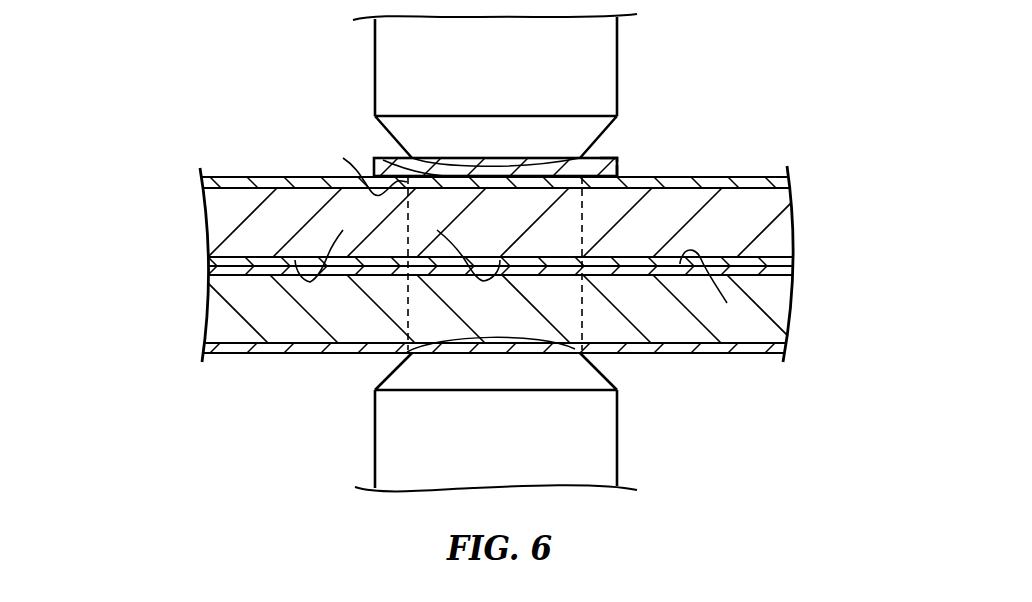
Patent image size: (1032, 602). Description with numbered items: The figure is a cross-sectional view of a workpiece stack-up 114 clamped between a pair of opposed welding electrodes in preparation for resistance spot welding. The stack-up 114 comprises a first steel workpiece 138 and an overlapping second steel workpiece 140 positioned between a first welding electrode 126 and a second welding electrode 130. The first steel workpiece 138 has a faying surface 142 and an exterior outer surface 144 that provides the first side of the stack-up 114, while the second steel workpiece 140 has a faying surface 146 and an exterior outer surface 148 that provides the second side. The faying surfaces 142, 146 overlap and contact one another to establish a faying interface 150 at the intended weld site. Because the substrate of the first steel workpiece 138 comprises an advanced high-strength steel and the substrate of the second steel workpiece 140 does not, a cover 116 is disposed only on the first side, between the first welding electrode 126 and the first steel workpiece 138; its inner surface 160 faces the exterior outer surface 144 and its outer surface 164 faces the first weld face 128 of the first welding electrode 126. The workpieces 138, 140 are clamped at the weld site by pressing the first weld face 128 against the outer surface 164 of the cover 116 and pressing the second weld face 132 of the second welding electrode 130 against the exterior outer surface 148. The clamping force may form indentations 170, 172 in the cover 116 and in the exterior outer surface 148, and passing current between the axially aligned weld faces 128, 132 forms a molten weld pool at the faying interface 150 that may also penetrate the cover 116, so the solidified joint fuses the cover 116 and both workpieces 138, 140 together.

The workpiece stack-up 114 is at (136, 255).
The cover 116 is at (618, 174).
The first welding electrode 126 is at (375, 70).
The first weld face 128 is at (392, 159).
The second welding electrode 130 is at (373, 433).
The second weld face 132 is at (408, 349).
The first steel workpiece 138 is at (207, 228).
The second steel workpiece 140 is at (198, 313).
The faying surface 142 is at (333, 243).
The exterior outer surface 144 is at (770, 177).
The faying surface 146 is at (714, 292).
The exterior outer surface 148 is at (723, 354).
The faying interface 150 is at (456, 242).
The inner surface 160 is at (348, 170).
The outer surface 164 is at (607, 158).
The indentation 170 is at (537, 160).
The indentation 172 is at (553, 346).